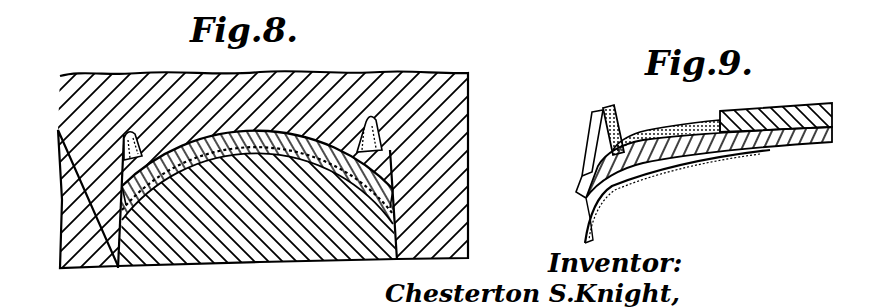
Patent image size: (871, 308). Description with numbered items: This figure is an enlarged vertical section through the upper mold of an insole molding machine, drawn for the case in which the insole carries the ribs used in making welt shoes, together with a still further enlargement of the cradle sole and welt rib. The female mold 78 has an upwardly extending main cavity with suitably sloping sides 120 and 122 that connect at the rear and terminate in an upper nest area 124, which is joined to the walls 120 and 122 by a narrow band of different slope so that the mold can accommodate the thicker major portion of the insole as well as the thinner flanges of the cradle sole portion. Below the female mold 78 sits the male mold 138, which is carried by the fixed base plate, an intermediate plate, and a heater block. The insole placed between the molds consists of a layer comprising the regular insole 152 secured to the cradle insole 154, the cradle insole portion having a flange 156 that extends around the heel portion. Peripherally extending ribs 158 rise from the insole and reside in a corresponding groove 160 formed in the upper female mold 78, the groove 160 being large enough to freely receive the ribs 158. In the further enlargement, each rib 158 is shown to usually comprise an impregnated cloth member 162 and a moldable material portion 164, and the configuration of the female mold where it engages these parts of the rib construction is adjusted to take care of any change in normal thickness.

In FIG. 8, the female mold 78 is at (417, 86).
In FIG. 8, the sloping side 120 is at (148, 268).
In FIG. 8, the sloping side 122 is at (383, 248).
In FIG. 8, the upper nest area 124 is at (380, 153).
In FIG. 8, the male mold 138 is at (264, 228).
In FIG. 8, the regular insole 152 is at (272, 140).
In FIG. 9, the regular insole 152 is at (775, 115).
In FIG. 8, the cradle insole 154 is at (212, 142).
In FIG. 9, the cradle insole 154 is at (778, 142).
In FIG. 8, the flange 156 is at (386, 200).
In FIG. 9, the flange 156 is at (585, 242).
In FIG. 8, the peripherally extending ribs 158 is at (372, 122).
In FIG. 9, the peripherally extending ribs 158 is at (606, 107).
In FIG. 8, the groove 160 is at (378, 138).
In FIG. 9, the impregnated cloth member 162 is at (616, 124).
In FIG. 9, the moldable material portion 164 is at (595, 133).